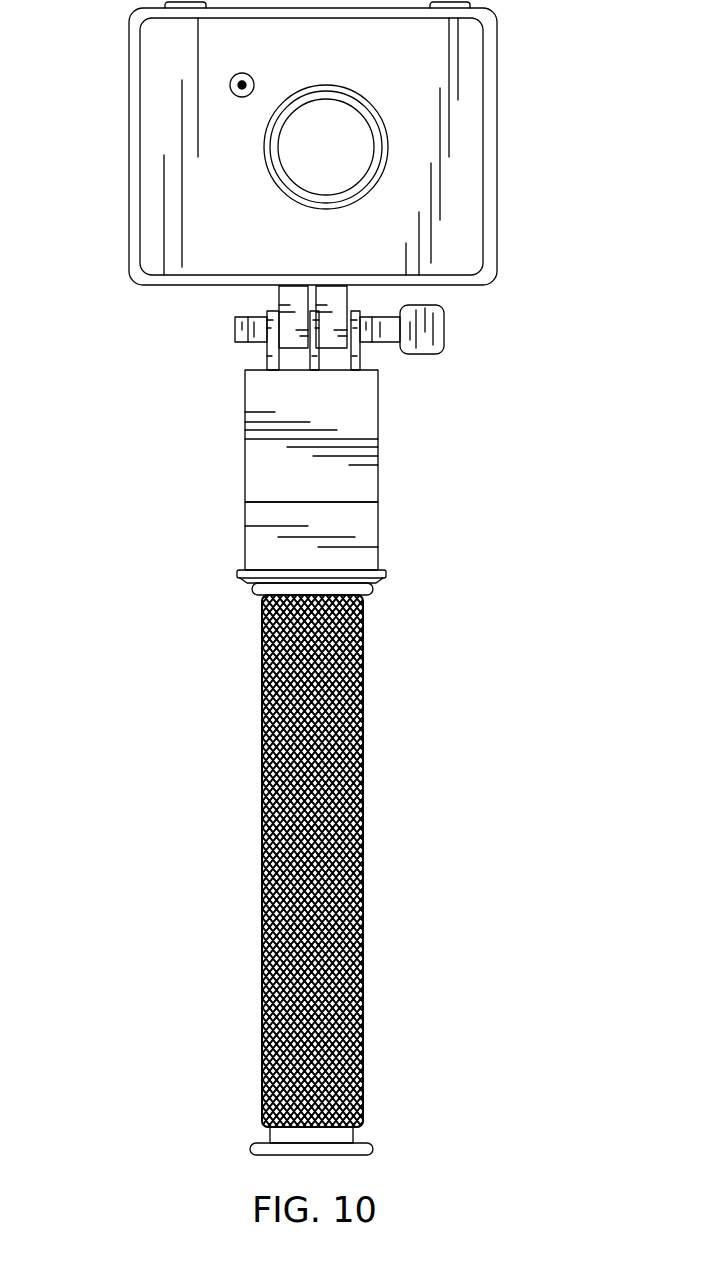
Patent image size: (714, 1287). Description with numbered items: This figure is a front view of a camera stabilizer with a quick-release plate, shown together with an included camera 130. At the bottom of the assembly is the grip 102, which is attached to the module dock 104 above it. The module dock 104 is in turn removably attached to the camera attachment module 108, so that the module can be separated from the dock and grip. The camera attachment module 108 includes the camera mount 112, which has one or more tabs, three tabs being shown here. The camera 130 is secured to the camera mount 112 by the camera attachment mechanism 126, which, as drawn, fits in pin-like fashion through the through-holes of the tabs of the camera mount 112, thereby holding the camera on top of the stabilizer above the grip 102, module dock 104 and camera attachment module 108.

The camera 130 is at (129, 111).
The camera mount 112 is at (268, 355).
The camera attachment mechanism 126 is at (445, 325).
The camera attachment module 108 is at (380, 426).
The module dock 104 is at (380, 530).
The grip 102 is at (363, 798).